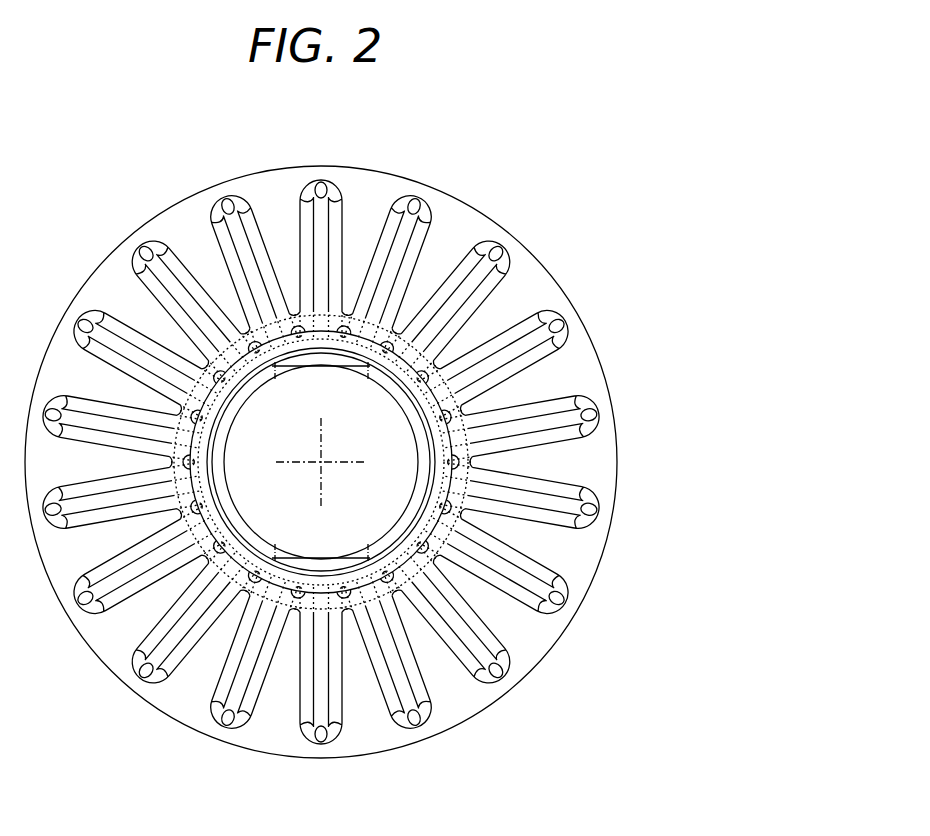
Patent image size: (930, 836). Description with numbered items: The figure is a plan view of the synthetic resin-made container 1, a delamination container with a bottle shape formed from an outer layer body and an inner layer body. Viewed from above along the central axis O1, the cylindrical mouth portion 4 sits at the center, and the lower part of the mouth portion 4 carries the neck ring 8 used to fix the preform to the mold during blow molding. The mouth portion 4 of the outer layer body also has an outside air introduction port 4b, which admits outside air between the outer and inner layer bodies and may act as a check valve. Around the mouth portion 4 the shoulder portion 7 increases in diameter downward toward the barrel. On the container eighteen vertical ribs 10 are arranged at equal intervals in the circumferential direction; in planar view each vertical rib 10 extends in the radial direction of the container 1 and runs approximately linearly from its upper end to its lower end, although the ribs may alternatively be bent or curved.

The synthetic resin-made container 1 is at (608, 271).
The mouth portion 4 is at (193, 357).
The outside air introduction port 4b is at (360, 556).
The shoulder portion 7 is at (358, 225).
The neck ring 8 is at (439, 358).
The vertical rib 10 is at (530, 420).
The central axis O1 is at (322, 461).